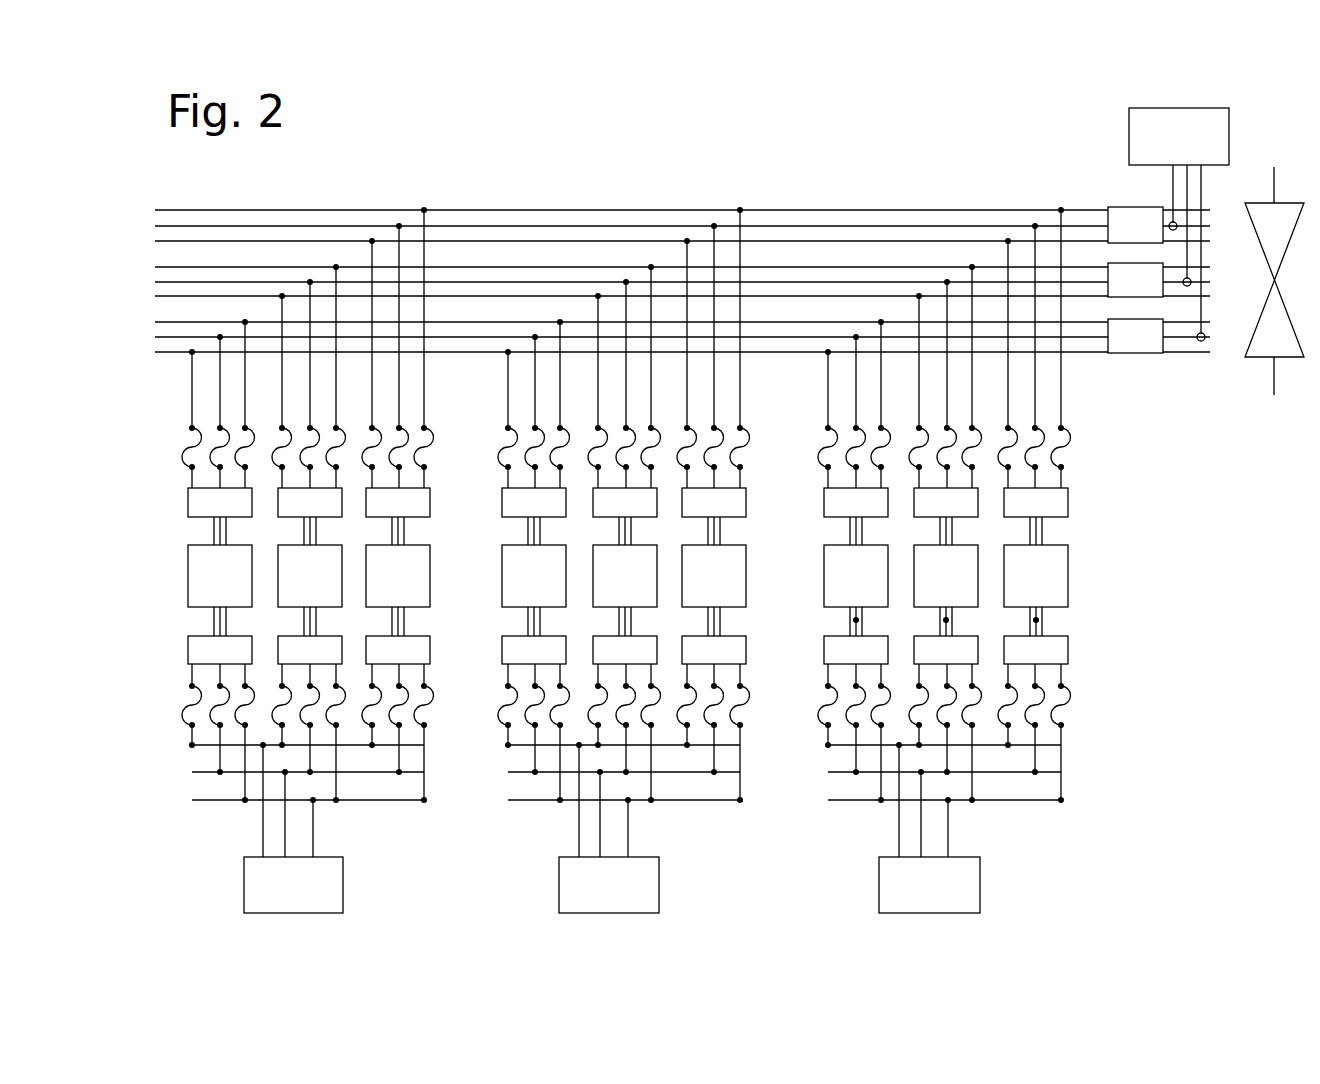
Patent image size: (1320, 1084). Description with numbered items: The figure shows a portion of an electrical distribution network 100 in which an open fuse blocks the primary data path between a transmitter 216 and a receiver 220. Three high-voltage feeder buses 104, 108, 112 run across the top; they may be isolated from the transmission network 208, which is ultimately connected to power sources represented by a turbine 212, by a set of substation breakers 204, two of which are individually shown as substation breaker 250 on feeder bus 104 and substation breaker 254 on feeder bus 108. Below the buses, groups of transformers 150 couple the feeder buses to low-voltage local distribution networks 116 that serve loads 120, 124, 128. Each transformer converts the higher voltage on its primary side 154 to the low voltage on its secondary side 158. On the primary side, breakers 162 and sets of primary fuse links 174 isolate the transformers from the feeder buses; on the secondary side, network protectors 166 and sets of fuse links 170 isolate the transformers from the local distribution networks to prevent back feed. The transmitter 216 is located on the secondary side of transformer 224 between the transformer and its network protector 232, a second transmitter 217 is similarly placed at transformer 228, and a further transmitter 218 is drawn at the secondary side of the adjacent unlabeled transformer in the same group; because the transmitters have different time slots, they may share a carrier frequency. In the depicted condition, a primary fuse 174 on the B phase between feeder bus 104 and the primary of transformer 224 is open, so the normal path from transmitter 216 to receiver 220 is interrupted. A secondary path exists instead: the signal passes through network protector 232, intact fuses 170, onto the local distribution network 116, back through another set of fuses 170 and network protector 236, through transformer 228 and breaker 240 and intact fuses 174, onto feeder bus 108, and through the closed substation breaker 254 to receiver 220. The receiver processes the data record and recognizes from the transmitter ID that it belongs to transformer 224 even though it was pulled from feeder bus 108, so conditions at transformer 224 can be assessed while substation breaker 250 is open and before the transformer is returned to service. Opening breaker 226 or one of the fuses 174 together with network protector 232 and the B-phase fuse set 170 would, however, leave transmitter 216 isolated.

The network 100 is at (608, 171).
The feeder bus 104 is at (155, 200).
The feeder bus 108 is at (155, 257).
The feeder bus 112 is at (155, 313).
The local distribution networks 116 is at (172, 742).
The load 120 is at (293, 827).
The load 124 is at (609, 827).
The load 128 is at (929, 827).
The transformers 150 is at (172, 545).
The primary side 154 is at (172, 519).
The secondary side 158 is at (172, 607).
The breakers 162 is at (172, 486).
The network protectors 166 is at (172, 636).
The fuse links 170 is at (172, 678).
The primary fuse links 174 is at (172, 427).
The substation breakers 204 is at (1105, 367).
The transmission network 208 is at (1170, 367).
The turbine 212 is at (1242, 385).
The transmitter 216 is at (1036, 620).
The transmitter 217 is at (946, 620).
The sensor 218 is at (856, 620).
The receiver 220 is at (1179, 136).
The transformer 224 is at (1036, 576).
The breaker 226 is at (1036, 502).
The transformer 228 is at (946, 576).
The network protector 232 is at (1036, 650).
The network protector 236 is at (946, 650).
The breaker 240 is at (946, 502).
The substation breaker 250 is at (1135, 225).
The substation breaker 254 is at (1135, 280).